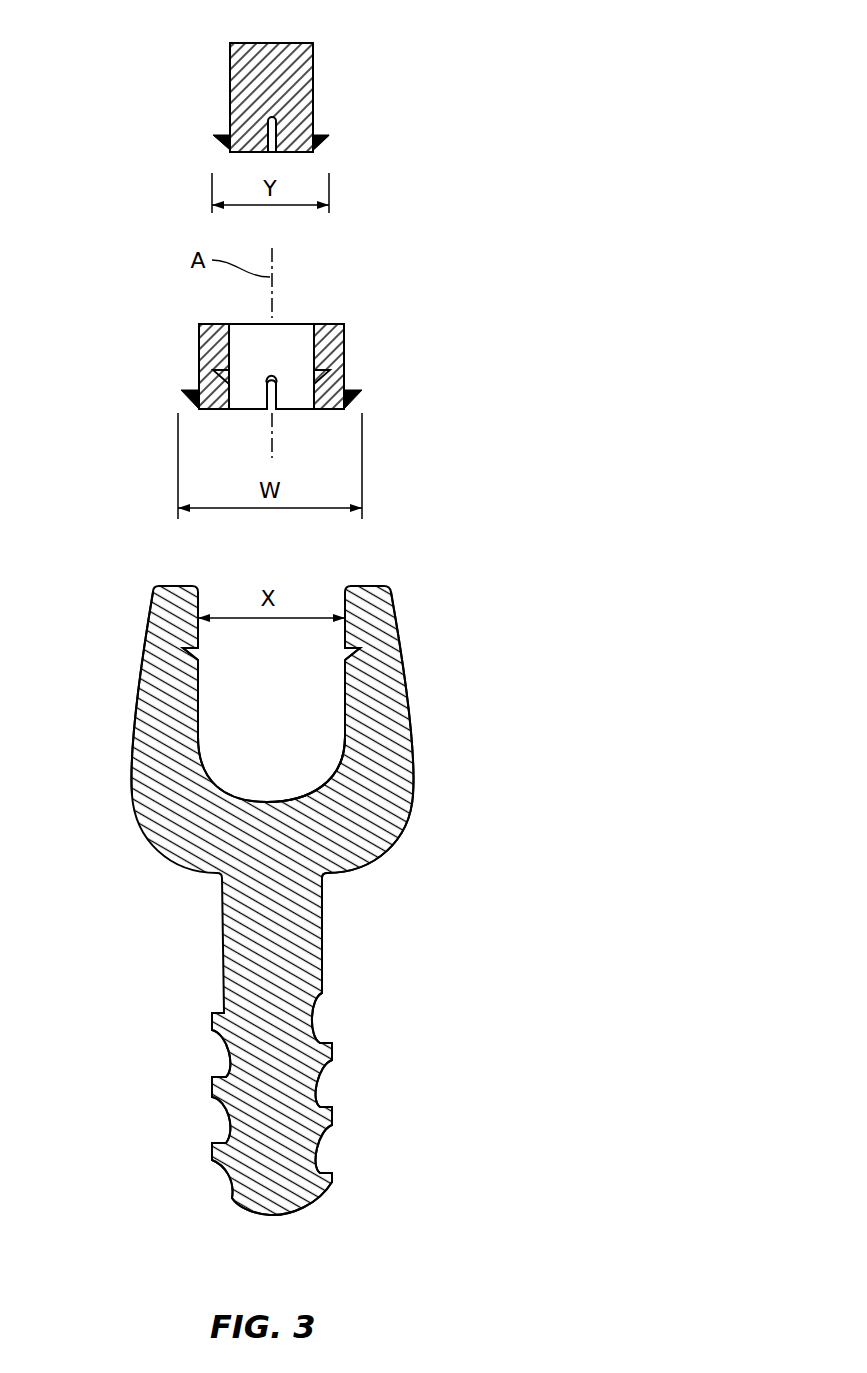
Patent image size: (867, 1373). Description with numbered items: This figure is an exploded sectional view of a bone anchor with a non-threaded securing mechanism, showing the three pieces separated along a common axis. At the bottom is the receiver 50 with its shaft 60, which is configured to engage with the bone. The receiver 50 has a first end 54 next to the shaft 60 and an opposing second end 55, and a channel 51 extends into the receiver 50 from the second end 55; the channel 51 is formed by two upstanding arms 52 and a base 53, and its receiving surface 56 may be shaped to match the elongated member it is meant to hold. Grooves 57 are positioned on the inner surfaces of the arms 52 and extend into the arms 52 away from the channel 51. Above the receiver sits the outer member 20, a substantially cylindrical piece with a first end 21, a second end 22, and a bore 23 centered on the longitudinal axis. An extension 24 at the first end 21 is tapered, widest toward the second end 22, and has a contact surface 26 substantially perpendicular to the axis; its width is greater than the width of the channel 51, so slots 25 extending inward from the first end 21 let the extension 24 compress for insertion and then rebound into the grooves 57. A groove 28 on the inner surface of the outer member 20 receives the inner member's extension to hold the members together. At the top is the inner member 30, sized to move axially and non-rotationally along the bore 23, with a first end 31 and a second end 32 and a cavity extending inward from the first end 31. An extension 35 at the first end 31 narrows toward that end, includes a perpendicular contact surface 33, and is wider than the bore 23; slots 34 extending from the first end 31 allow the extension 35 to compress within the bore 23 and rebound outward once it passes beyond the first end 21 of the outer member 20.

The outer member 20 is at (457, 366).
The first end 21 is at (346, 411).
The second end 22 is at (334, 325).
The bore 23 is at (298, 360).
The extension 24 is at (190, 393).
The slots 25 is at (264, 392).
The contact surface 26 is at (352, 395).
The groove 28 is at (242, 376).
The inner member 30 is at (412, 96).
The first end 31 is at (250, 153).
The second end 32 is at (251, 43).
The contact surface 33 is at (317, 140).
The slots 34 is at (305, 148).
The extension 35 is at (220, 138).
The receiver 50 is at (449, 726).
The channel 51 is at (252, 777).
The arms 52 is at (138, 670).
The base 53 is at (381, 824).
The first end 54 is at (357, 874).
The second end 55 is at (182, 585).
The receiving surface 56 is at (292, 797).
The grooves 57 is at (194, 656).
The shaft 60 is at (288, 1068).